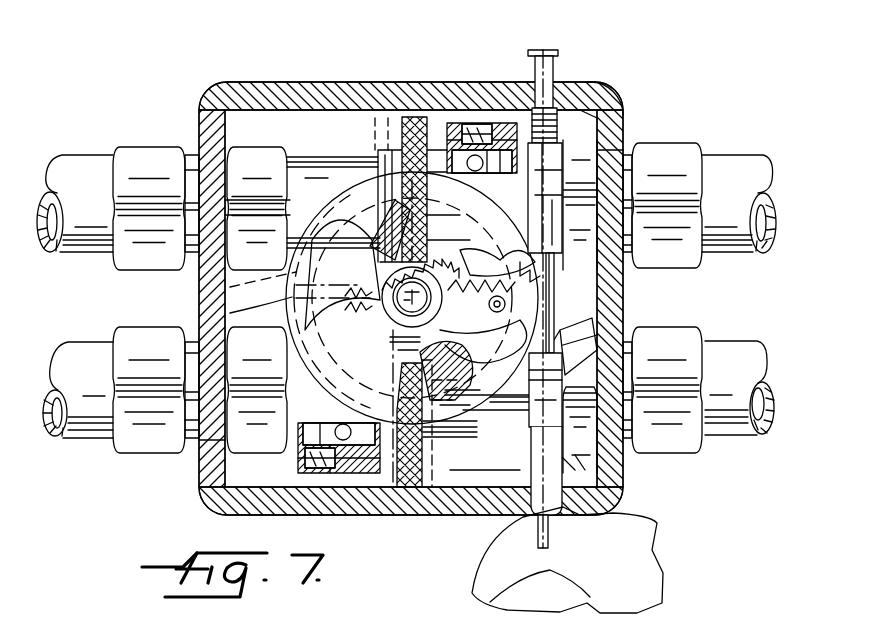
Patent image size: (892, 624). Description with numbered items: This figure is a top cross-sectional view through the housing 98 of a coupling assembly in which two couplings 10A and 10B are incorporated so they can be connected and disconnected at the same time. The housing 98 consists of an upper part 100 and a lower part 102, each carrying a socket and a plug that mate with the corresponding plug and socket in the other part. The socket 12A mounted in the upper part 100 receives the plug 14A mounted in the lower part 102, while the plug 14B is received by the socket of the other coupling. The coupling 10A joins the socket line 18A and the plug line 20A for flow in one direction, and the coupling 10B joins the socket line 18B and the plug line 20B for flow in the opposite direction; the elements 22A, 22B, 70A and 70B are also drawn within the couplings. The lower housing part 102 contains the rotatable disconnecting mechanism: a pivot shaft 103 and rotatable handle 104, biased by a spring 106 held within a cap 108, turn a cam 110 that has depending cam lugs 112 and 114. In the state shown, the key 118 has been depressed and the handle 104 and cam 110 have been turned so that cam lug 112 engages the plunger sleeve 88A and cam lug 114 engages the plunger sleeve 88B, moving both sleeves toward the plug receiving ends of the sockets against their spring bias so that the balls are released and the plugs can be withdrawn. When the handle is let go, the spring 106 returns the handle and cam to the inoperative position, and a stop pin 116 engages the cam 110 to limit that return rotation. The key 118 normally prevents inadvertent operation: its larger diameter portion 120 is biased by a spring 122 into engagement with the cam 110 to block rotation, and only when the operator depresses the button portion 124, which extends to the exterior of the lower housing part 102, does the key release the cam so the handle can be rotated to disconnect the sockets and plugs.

The housing 98 is at (243, 74).
The upper housing part 100 is at (220, 88).
The lower housing part 102 is at (603, 86).
The spring 122 is at (592, 103).
The coupling 10A is at (378, 110).
The coupling 10B is at (258, 462).
The socket 12A is at (238, 143).
The plug 14A is at (600, 132).
The plug 14B is at (602, 383).
The socket line 18A is at (76, 163).
The socket line 18B is at (740, 348).
The plug line 20A is at (742, 160).
The plug line 20B is at (78, 442).
The first valve element 22A is at (470, 148).
The second valve element 22B is at (318, 472).
The first seal assembly 70A is at (460, 128).
The second seal assembly 70B is at (333, 473).
The outer sleeve 88A is at (410, 116).
The outer sleeve 88B is at (406, 488).
The pivot shaft 103 is at (388, 308).
The rotatable handle 104 is at (590, 322).
The spring 106 is at (486, 248).
The cap 108 is at (230, 315).
The cam 110 is at (480, 402).
The cam lug 112 is at (363, 193).
The cam lug 114 is at (455, 410).
The stop pin 116 is at (230, 290).
The key 118 is at (585, 462).
The larger diameter portion 120 is at (598, 157).
The button portion 124 is at (550, 538).